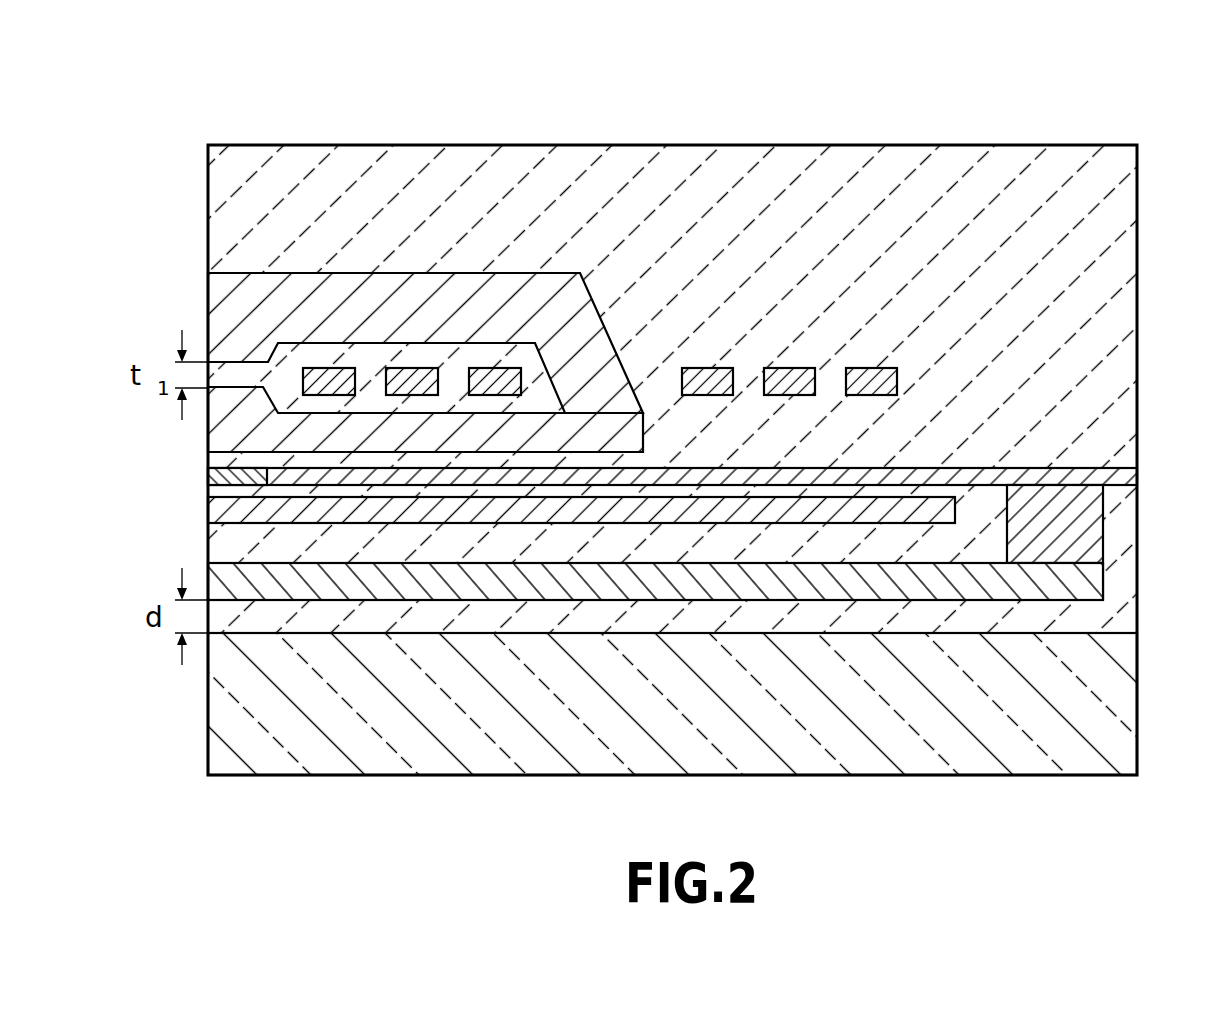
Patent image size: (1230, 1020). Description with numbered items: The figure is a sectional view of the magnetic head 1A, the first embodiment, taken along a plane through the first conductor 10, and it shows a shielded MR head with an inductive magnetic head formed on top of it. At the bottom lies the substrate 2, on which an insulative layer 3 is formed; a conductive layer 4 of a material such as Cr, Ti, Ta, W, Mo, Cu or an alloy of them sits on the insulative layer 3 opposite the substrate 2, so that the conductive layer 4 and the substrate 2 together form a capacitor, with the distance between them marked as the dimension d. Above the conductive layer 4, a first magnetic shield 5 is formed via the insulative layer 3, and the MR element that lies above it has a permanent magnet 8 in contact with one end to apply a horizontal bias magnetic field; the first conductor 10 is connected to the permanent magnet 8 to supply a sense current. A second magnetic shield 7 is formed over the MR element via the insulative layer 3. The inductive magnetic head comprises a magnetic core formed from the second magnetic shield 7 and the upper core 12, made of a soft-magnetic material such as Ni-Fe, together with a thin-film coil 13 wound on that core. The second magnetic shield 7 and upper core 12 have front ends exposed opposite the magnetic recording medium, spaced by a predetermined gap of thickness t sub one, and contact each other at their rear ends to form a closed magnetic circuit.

The magnetic head 1A is at (972, 118).
The substrate 2 is at (1110, 718).
The insulative layer 3 is at (235, 375).
The conductive layer 4 is at (1082, 587).
The first magnetic shield 5 is at (220, 512).
The second magnetic shield 7 is at (222, 432).
The permanent magnet 8 is at (220, 478).
The first conductor 10 is at (1095, 470).
The upper core 12 is at (228, 283).
The thin-film coil 13 is at (332, 393).